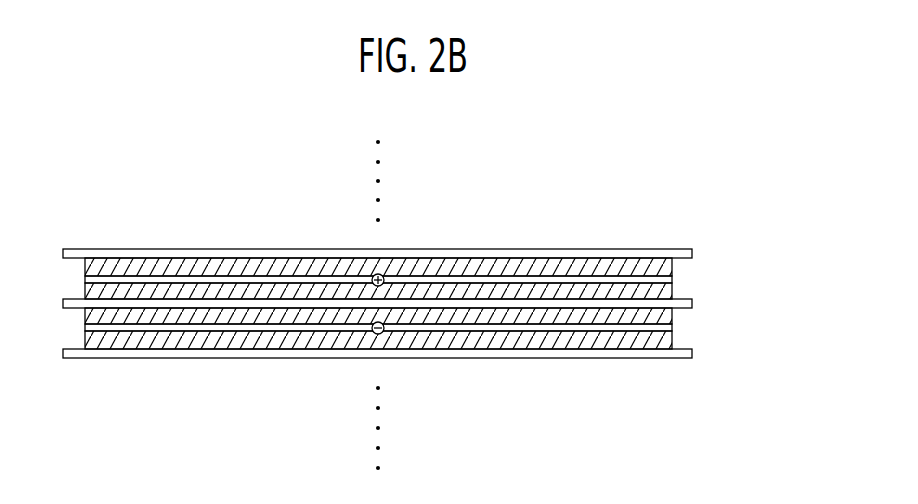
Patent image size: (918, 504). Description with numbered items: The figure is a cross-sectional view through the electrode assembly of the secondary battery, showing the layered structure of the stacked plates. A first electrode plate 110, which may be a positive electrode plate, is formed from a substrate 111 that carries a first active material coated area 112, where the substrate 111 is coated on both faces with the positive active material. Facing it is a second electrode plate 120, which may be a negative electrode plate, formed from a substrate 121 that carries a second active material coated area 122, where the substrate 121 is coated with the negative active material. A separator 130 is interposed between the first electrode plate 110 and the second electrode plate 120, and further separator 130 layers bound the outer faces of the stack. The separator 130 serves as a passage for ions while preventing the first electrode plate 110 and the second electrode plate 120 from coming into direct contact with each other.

The first electrode plate 110 is at (455, 236).
The substrate 111 is at (640, 280).
The first active material coated area 112 is at (572, 293).
The second electrode plate 120 is at (455, 375).
The substrate 121 is at (640, 332).
The second active material coated area 122 is at (576, 315).
The separator 130 is at (694, 255).